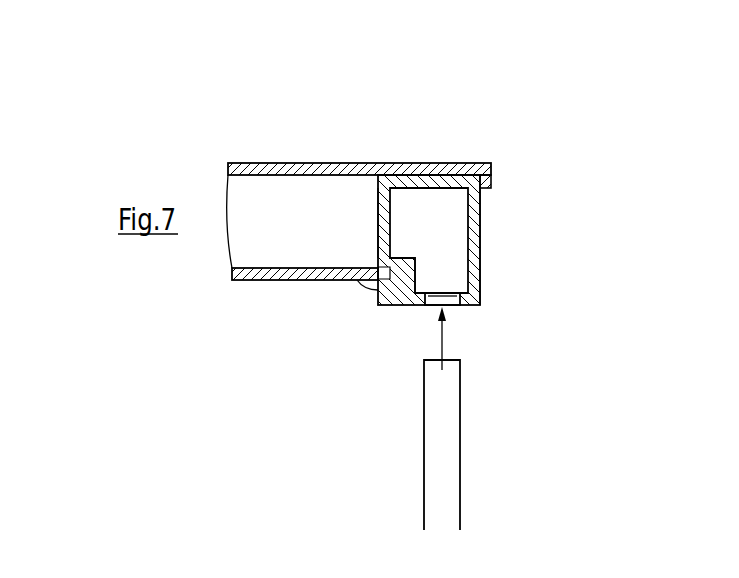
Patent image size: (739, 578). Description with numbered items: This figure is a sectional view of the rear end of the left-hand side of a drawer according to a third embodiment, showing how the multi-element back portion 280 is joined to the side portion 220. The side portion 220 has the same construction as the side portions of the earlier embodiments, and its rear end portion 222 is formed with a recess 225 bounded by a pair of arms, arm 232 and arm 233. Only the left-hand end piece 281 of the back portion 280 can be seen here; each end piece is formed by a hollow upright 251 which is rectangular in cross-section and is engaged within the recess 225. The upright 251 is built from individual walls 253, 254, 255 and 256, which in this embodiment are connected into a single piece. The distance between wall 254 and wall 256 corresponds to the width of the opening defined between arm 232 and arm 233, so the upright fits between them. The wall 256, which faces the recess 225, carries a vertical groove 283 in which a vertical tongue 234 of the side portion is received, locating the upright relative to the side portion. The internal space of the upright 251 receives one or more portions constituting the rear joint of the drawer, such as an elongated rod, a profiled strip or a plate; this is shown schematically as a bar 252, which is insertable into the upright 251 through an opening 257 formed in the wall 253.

The side portion 220 is at (332, 240).
The rear end portion 222 is at (298, 163).
The recess 225 is at (343, 228).
The arm 232 is at (493, 178).
The arm 233 is at (372, 284).
The vertical tongue 234 is at (383, 307).
The hollow upright 251 is at (493, 225).
The bar 252 is at (450, 462).
The wall 253 is at (472, 304).
The wall 254 is at (480, 282).
The wall 255 is at (425, 183).
The wall 256 is at (378, 223).
The opening 257 is at (450, 306).
The multi-element back portion 280 is at (492, 374).
The left-hand end piece 281 is at (480, 244).
The vertical groove 283 is at (403, 250).